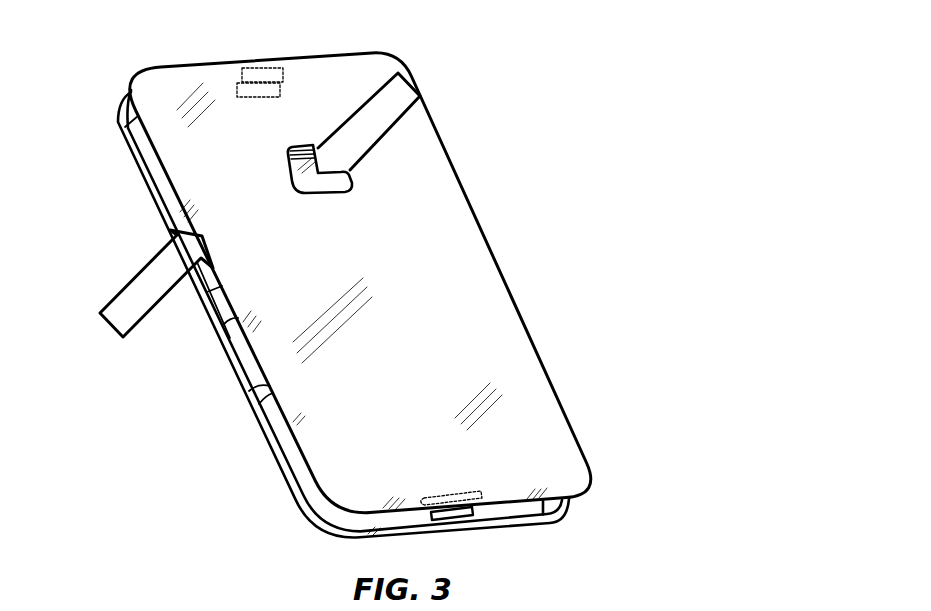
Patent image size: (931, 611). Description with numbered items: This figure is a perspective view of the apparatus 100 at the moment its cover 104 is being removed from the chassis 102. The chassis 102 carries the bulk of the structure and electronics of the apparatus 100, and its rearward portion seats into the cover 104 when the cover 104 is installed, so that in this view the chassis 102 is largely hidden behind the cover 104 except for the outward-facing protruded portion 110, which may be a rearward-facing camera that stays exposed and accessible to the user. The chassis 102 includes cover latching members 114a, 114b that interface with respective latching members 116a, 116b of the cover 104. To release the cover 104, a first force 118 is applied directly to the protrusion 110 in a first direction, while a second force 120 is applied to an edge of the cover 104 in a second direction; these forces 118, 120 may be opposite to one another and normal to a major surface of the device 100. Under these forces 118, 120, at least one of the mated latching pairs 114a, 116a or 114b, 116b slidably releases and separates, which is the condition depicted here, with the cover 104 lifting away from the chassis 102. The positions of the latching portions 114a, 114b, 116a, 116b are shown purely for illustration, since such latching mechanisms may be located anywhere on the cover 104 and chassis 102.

The apparatus 100 is at (478, 53).
The chassis portion 102 is at (247, 387).
The cover 104 is at (445, 198).
The protruded portion 110 is at (320, 185).
The cover latching member 114a is at (237, 83).
The cover latching member 114b is at (457, 520).
The latching member 116a is at (268, 65).
The latching member 116b is at (470, 498).
The first force 118 is at (400, 112).
The second force 120 is at (133, 298).